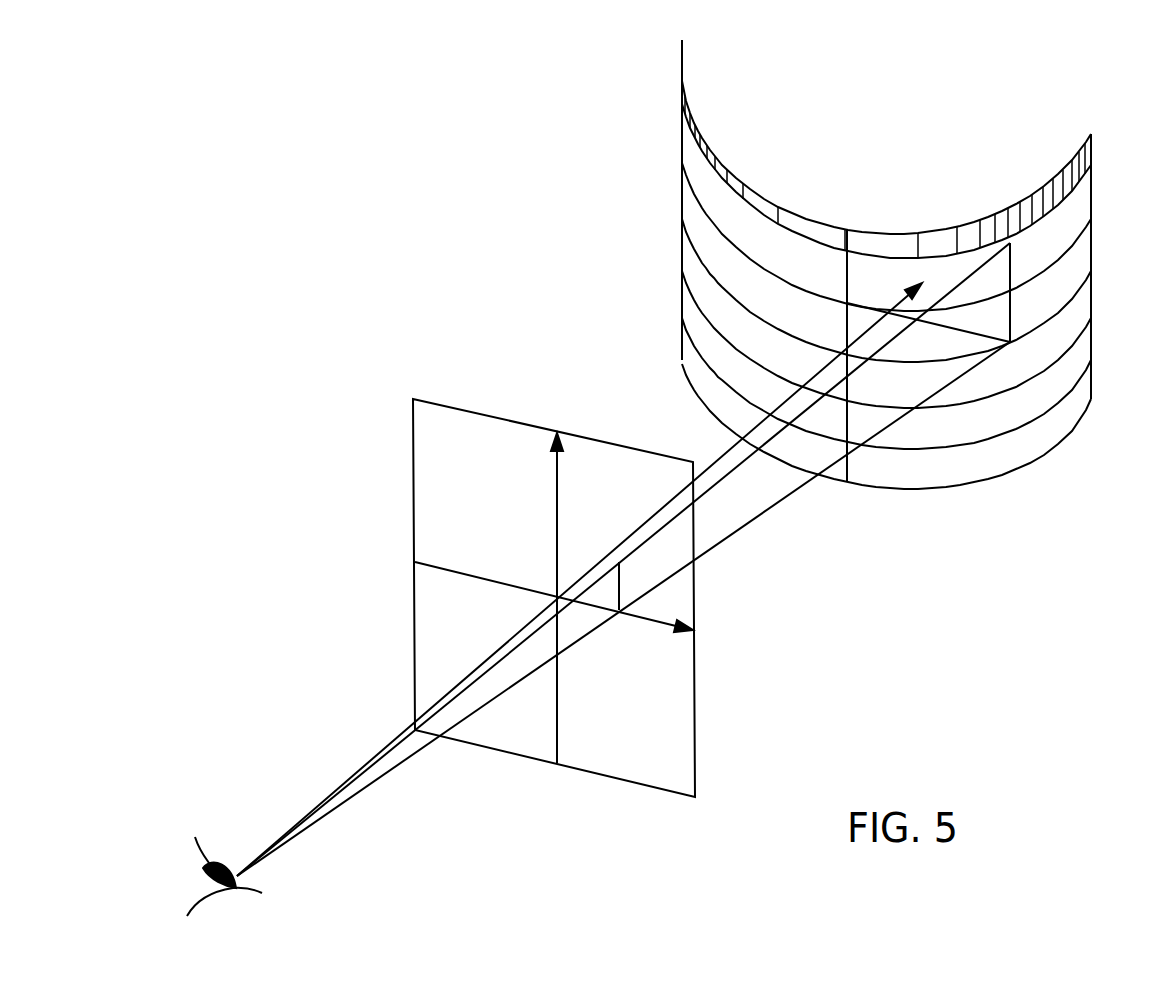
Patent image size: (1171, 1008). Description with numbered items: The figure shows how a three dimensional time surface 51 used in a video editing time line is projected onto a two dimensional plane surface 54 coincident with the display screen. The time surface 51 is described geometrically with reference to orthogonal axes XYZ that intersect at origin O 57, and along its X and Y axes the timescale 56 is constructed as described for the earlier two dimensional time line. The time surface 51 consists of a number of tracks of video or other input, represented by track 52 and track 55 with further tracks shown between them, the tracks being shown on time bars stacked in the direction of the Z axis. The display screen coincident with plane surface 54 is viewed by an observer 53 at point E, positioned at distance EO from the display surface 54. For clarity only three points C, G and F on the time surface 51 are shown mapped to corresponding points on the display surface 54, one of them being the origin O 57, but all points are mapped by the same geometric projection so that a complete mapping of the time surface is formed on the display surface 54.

The three dimensional time surface 51 is at (780, 310).
The track 52 is at (1093, 190).
The observer 53 is at (212, 852).
The two dimensional plane surface 54 is at (680, 725).
The track 55 is at (1093, 370).
The timescale 56 is at (906, 243).
The origin O 57 is at (538, 602).